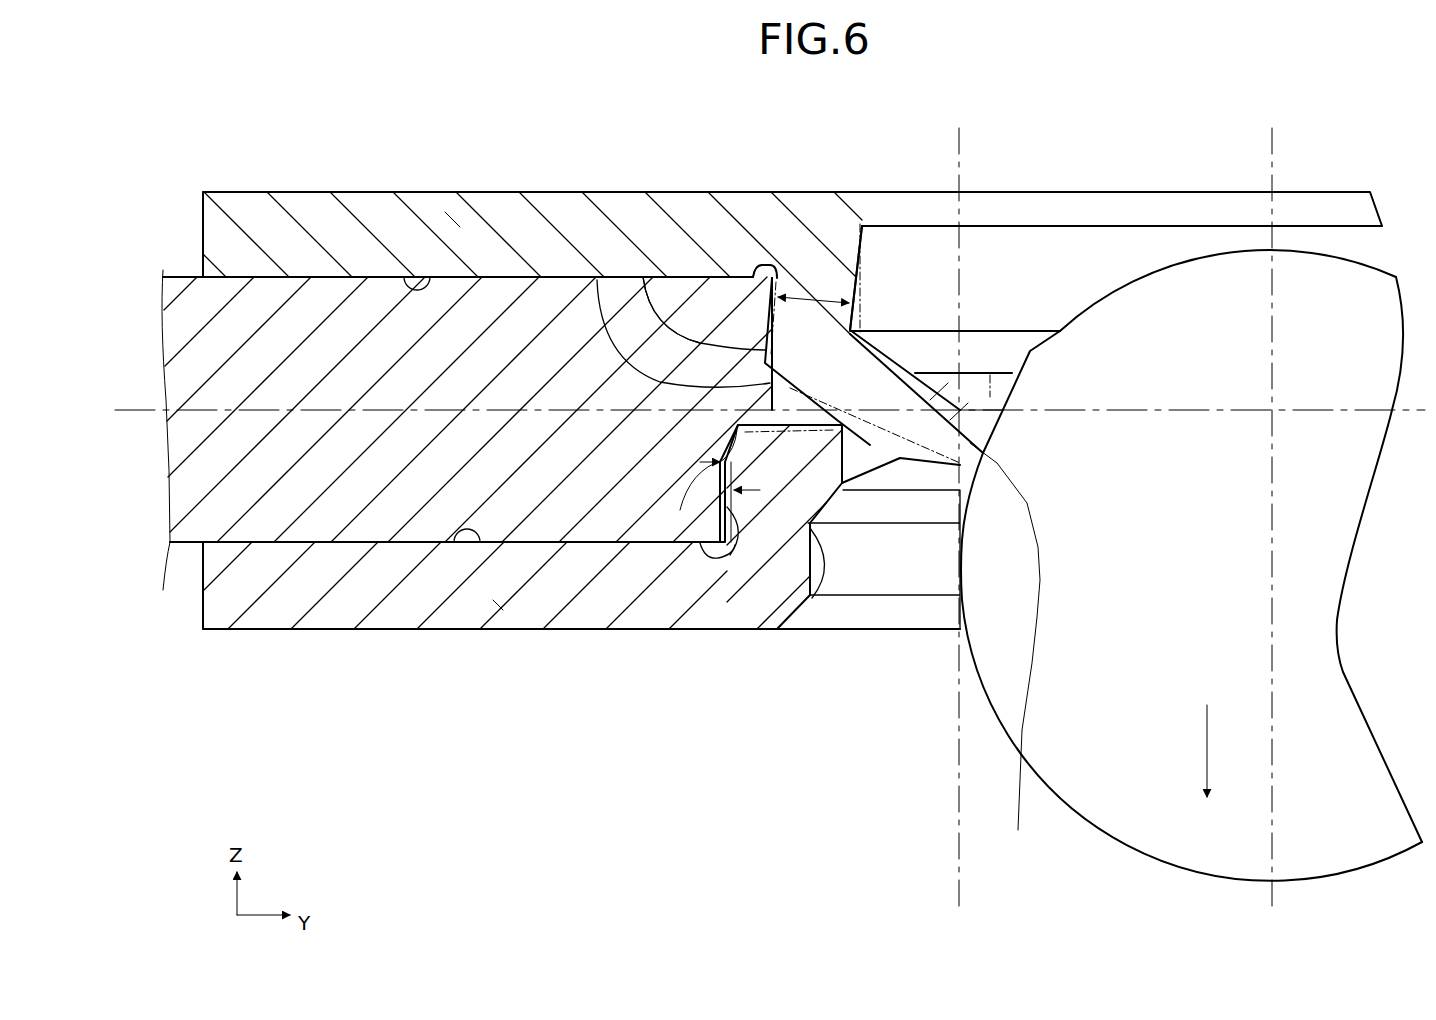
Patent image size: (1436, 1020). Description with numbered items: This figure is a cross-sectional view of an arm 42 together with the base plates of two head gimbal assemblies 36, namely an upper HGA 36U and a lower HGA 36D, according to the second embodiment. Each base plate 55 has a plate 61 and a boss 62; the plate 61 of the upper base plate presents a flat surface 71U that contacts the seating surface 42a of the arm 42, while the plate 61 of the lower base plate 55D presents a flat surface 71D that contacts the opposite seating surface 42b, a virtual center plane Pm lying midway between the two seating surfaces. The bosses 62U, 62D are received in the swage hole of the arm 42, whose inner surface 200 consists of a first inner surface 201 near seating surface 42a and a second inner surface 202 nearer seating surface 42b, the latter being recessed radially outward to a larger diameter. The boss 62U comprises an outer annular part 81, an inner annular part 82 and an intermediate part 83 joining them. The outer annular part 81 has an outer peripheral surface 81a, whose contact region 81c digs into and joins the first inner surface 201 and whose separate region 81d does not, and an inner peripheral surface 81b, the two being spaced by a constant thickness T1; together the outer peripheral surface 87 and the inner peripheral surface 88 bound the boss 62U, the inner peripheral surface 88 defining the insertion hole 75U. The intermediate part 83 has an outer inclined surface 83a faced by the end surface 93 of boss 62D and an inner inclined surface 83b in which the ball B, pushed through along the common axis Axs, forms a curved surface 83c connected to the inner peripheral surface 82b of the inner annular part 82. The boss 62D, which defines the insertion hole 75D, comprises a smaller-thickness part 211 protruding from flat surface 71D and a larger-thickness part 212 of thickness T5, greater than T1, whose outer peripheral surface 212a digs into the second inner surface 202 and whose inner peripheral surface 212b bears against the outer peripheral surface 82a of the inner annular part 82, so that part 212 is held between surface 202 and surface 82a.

The HGA 36 is at (780, 218).
The HGA 36U is at (236, 188).
The HGA 36D is at (240, 632).
The base plate 55 is at (481, 164).
The base plate 55D is at (362, 629).
The flat surface 71U is at (405, 277).
The flat surface 71D is at (465, 545).
The plate 61 is at (452, 218).
The arm 42 is at (163, 285).
The seating surface 42a is at (170, 277).
The seating surface 42b is at (185, 545).
The outer annular part 81 is at (808, 290).
The outer peripheral surface 81a is at (667, 233).
The contact region 81c is at (667, 233).
The outer peripheral surface 87 is at (643, 277).
The separate region 81d is at (760, 264).
The inner peripheral surface 81b is at (907, 272).
The inner peripheral surface 88 is at (870, 330).
The inner surface 200 is at (810, 274).
The first inner surface 201 is at (788, 380).
The intermediate part 83 is at (883, 330).
The outer inclined surface 83a is at (655, 285).
The inner inclined surface 83b is at (905, 330).
The curved surface 83c is at (975, 370).
The inner annular part 82 is at (1005, 370).
The outer peripheral surface 82a is at (660, 440).
The inner peripheral surface 82b is at (1007, 655).
The boss 62 is at (991, 256).
The boss 62U is at (945, 386).
The boss 62D is at (720, 460).
The insertion hole 75U is at (1220, 205).
The insertion hole 75D is at (946, 632).
The end surface 93 is at (655, 385).
The second inner surface 202 is at (713, 433).
The smaller-thickness part 211 is at (808, 598).
The larger-thickness part 212 is at (812, 597).
The outer peripheral surface 212a is at (770, 430).
The inner peripheral surface 212b is at (840, 488).
The thickness T1 is at (815, 296).
The thickness T5 is at (740, 495).
The center plane Pm is at (122, 408).
The axis Axs is at (1278, 141).
The ball B is at (1333, 838).